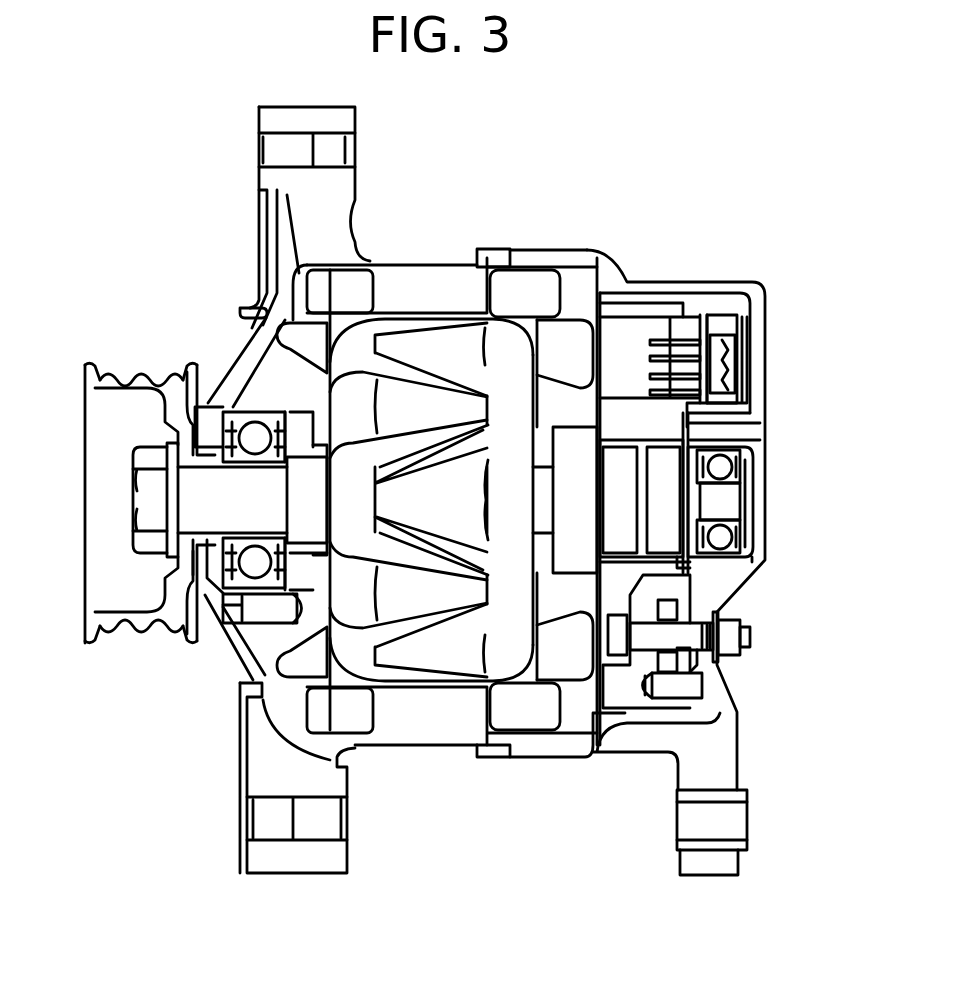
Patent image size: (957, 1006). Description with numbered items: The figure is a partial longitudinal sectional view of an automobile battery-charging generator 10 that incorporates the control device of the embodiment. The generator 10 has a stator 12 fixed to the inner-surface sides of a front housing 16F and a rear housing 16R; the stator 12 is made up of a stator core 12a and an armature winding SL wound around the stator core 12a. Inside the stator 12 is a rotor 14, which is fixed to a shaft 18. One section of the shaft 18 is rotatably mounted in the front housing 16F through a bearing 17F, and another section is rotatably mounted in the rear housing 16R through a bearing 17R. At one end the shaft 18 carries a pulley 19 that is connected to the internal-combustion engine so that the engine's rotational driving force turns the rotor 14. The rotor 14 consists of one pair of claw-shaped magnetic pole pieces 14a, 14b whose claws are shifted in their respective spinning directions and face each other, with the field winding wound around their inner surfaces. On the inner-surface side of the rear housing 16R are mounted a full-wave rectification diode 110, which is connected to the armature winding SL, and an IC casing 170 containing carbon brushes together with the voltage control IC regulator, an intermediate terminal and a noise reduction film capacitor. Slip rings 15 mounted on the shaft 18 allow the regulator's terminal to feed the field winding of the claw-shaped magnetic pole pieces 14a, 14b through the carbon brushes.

The automobile battery-charging generator 10 is at (200, 240).
The stator 12 is at (427, 250).
The stator core 12a is at (456, 280).
The armature winding SL is at (523, 290).
The rotor 14 is at (443, 667).
The claw-shaped magnetic pole piece 14a is at (400, 607).
The claw-shaped magnetic pole piece 14b is at (505, 660).
The slip rings 15 is at (667, 504).
The front housing 16F is at (254, 306).
The rear housing 16R is at (582, 262).
The bearing 17F is at (240, 607).
The bearing 17R is at (737, 532).
The shaft 18 is at (203, 495).
The pulley 19 is at (128, 367).
The full-wave rectification diode 110 is at (690, 666).
The IC casing 170 is at (720, 345).